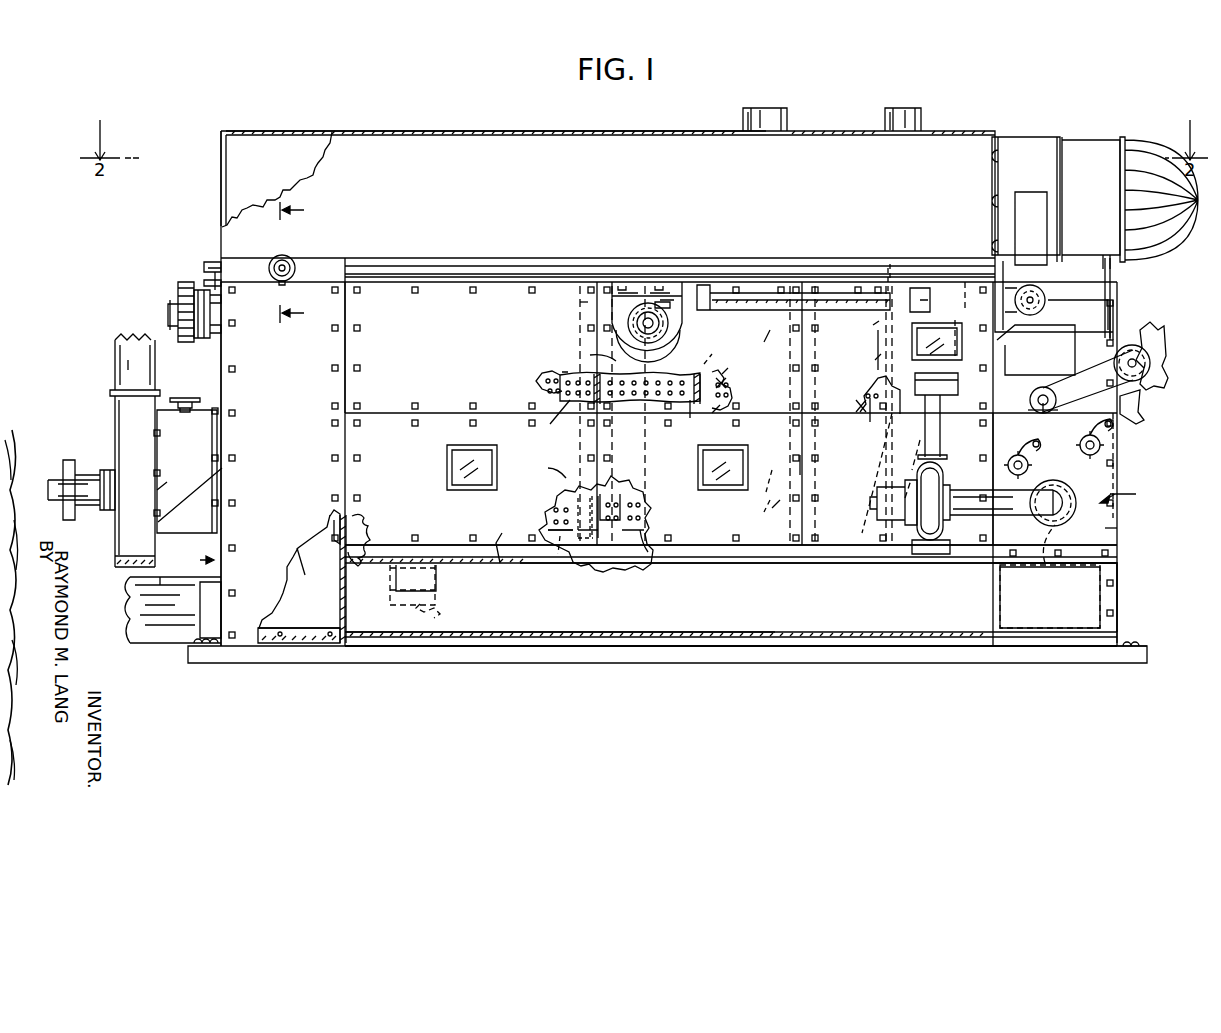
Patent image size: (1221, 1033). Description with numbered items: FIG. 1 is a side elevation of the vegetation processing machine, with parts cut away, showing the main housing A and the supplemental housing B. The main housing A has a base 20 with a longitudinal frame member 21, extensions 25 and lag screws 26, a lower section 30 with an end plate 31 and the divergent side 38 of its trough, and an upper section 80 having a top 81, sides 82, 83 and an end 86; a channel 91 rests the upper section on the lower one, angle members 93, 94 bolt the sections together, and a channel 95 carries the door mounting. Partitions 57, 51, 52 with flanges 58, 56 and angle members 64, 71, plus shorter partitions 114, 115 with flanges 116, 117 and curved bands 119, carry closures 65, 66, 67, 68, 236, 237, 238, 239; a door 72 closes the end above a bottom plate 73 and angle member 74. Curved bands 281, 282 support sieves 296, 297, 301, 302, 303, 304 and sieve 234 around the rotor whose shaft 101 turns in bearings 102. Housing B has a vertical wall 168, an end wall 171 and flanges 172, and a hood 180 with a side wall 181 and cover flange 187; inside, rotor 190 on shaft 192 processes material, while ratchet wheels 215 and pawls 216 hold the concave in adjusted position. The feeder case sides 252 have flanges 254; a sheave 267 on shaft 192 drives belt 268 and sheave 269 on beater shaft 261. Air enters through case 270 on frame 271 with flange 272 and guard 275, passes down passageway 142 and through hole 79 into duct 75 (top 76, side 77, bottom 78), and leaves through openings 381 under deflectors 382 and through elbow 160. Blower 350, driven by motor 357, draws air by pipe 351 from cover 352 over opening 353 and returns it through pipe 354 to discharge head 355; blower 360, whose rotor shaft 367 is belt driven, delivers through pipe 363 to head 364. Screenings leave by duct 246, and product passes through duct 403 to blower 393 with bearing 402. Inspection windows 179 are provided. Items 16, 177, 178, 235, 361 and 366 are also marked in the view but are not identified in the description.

The upper section 80 is at (537, 176).
The top 81 is at (274, 130).
The side 82 is at (444, 220).
The side 83 is at (316, 140).
The end 86 is at (221, 166).
The section line 16 is at (281, 262).
The base 20 is at (875, 648).
The longitudinal channel shaped frame member 21 is at (1100, 656).
The extensions 25 is at (203, 660).
The lag screws 26 is at (1140, 637).
The lower section 30 is at (216, 534).
The end plate 31 is at (222, 508).
The divergent side of trough 38 is at (650, 552).
The partition 51 is at (560, 386).
The partition 52 is at (800, 464).
The flange of partition 56 is at (560, 544).
The partition 57 is at (342, 570).
The flange 58 is at (778, 344).
The angle member 64 is at (332, 523).
The closure 65 is at (454, 366).
The closure 66 is at (524, 522).
The short closure 67 is at (590, 354).
The closure 68 is at (735, 398).
The angle member 71 is at (356, 518).
The door 72 is at (224, 426).
The bottom plate 73 is at (308, 644).
The angle member 74 is at (270, 644).
The duct 75 is at (708, 647).
The top of duct 76 is at (448, 540).
The side of duct 77 is at (800, 596).
The bottom of duct 78 is at (490, 635).
The hole 79 is at (345, 584).
The channel 91 is at (534, 258).
The angle member 93 is at (210, 258).
The angle member 94 is at (206, 282).
The channel 95 is at (304, 264).
The shaft 101 is at (170, 314).
The bearings 102 is at (210, 324).
The partition 114 is at (690, 418).
The partition 115 is at (878, 356).
The flange 116 is at (708, 359).
The flange 117 is at (879, 324).
The curved bands 119 is at (730, 372).
The vertical passageway 142 is at (283, 552).
The elbow 160 is at (1040, 630).
The vertical wall 168 is at (1122, 524).
The end wall 171 is at (1114, 478).
The flange 172 is at (993, 448).
The exhaust stack 177 is at (745, 112).
The exhaust stack 178 is at (888, 112).
The inspection windows 179 is at (454, 470).
The hood 180 is at (1116, 336).
The side wall 181 is at (950, 381).
The outstanding flange 187 is at (1049, 318).
The rotor 190 is at (1044, 286).
The shaft 192 is at (1041, 406).
The ratchet wheels 215 is at (1028, 456).
The pawls 216 is at (1036, 438).
The sieve 234 is at (644, 396).
The conveyor end plate 235 is at (868, 394).
The closure 236 is at (780, 498).
The closure 237 is at (870, 341).
The closure 238 is at (965, 280).
The closure 239 is at (854, 468).
The duct 246 is at (182, 630).
The sides 252 is at (1150, 316).
The flanges 254 is at (1152, 388).
The shaft 261 is at (1146, 357).
The sheave 267 is at (1061, 376).
The belt 268 is at (1052, 392).
The sheave 269 is at (1136, 364).
The case 270 is at (1096, 166).
The frame 271 is at (1121, 292).
The flange 272 is at (1004, 156).
The guard 275 is at (1166, 140).
The curved bands 281 is at (582, 304).
The curved bands 282 is at (560, 498).
The sieve 296 is at (550, 538).
The sieve 297 is at (598, 556).
The sieve 301 is at (550, 376).
The sieve 302 is at (578, 416).
The sieve 303 is at (734, 382).
The sieve 304 is at (868, 404).
The blower 350 is at (917, 540).
The pipe 351 is at (971, 514).
The cover 352 is at (1070, 510).
The opening 353 is at (1036, 612).
The pipe 354 is at (937, 434).
The discharge head 355 is at (980, 378).
The motor 357 is at (876, 504).
The blower 360 is at (614, 327).
The fan 361 is at (650, 314).
The pipe 363 is at (770, 294).
The discharge head 364 is at (922, 290).
The fan housing 366 is at (648, 320).
The rotor shaft 367 is at (638, 300).
The openings 381 is at (416, 568).
The deflectors 382 is at (434, 608).
The blower 393 is at (120, 438).
The bearing 402 is at (122, 510).
The duct 403 is at (214, 470).
The main housing A is at (197, 559).
The supplemental housing B is at (1124, 497).